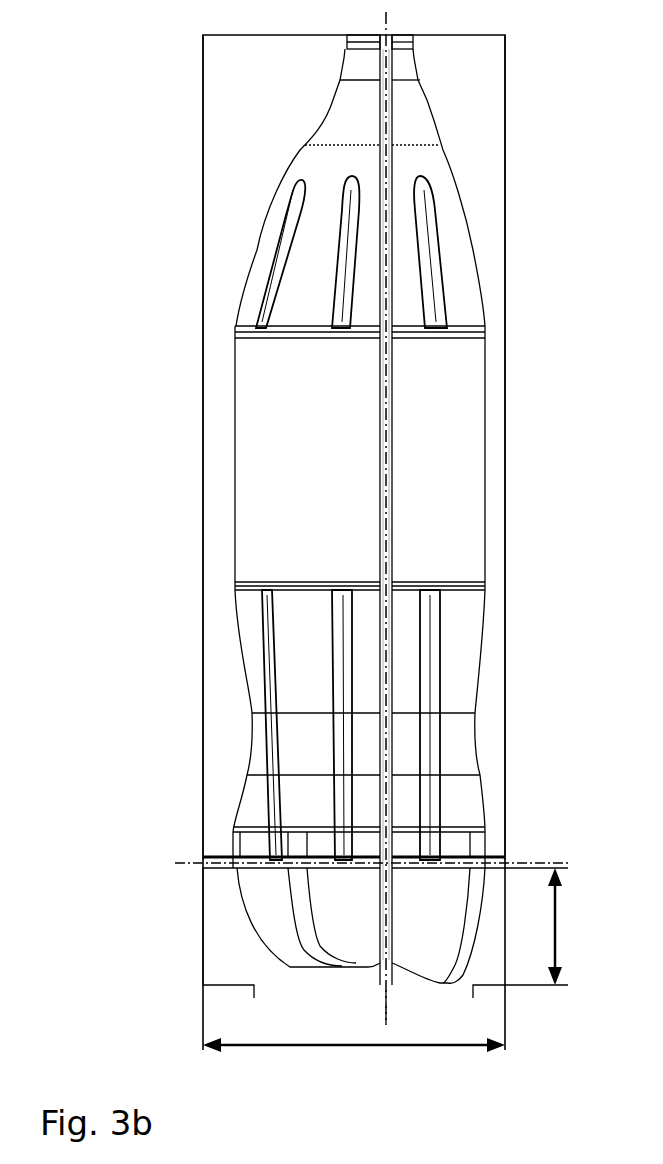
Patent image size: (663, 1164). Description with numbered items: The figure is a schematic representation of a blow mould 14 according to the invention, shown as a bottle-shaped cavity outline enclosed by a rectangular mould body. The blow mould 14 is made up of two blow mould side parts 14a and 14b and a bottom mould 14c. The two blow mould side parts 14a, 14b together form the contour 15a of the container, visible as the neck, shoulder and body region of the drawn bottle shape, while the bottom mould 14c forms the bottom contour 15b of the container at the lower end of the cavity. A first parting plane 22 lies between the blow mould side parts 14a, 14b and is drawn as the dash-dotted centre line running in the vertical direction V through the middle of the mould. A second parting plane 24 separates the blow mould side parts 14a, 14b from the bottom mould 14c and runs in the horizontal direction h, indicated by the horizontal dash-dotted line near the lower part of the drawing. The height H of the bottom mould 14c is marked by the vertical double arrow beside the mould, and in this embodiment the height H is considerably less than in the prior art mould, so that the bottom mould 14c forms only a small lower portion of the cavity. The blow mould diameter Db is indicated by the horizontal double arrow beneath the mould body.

The blow mould 14 is at (158, 46).
The blow mould side part 14a is at (222, 114).
The blow mould side part 14b is at (464, 118).
The bottom mould 14c is at (214, 935).
The first parting plane 22 is at (388, 66).
The contour 15a is at (256, 447).
The bottom contour 15b is at (447, 934).
The second parting plane 24 is at (489, 862).
The horizontal direction h is at (185, 861).
The height of the bottom mould H is at (555, 900).
The vertical direction V is at (386, 1020).
The blow mould diameter Db is at (342, 1046).